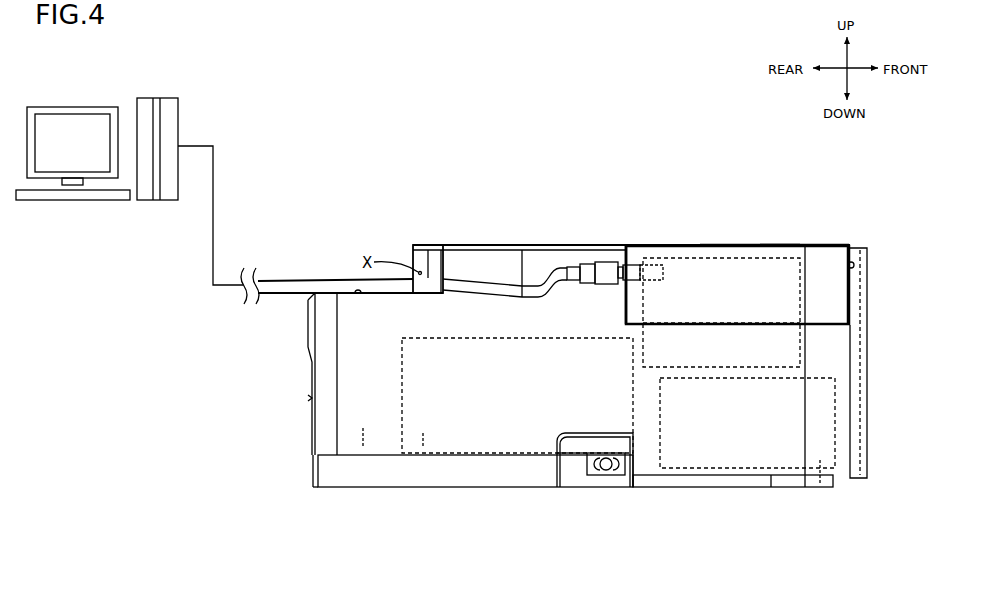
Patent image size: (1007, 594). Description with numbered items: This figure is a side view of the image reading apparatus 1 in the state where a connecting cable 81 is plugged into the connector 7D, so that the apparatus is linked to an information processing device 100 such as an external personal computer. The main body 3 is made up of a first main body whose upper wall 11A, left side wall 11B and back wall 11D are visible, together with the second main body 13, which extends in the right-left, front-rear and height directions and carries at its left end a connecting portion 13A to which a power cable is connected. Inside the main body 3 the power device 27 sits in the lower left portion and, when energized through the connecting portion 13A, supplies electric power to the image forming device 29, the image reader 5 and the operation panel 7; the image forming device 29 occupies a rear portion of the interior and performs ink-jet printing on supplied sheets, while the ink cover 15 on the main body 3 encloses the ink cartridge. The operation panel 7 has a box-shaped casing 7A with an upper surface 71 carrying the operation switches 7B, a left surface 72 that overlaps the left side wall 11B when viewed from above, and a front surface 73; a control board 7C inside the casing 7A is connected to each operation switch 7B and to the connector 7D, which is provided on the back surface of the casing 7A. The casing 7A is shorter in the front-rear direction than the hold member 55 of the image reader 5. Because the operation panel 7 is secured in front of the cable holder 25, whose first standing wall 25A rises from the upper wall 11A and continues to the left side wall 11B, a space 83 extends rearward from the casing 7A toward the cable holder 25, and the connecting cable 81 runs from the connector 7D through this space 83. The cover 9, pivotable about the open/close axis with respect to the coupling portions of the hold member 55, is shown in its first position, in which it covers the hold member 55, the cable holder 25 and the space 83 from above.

The image reading apparatus 1 is at (276, 480).
The main body 3 is at (307, 361).
The image reader 5 is at (412, 248).
The operation panel 7 is at (702, 239).
The casing 7A is at (790, 243).
The operation switches 7B is at (747, 243).
The control board 7C is at (790, 353).
The connector 7D is at (628, 245).
The cover 9 is at (560, 243).
The upper wall 11A is at (362, 296).
The left side wall 11B is at (363, 447).
The back wall 11D is at (312, 407).
The second main body 13 is at (520, 474).
The connecting portion 13A is at (600, 477).
The ink cover 15 is at (867, 248).
The cable holder 25 is at (460, 261).
The first standing wall 25A is at (500, 258).
The power device 27 is at (820, 486).
The image forming device 29 is at (423, 447).
The hold member 55 is at (437, 258).
The upper surface 71 is at (817, 243).
The left surface 72 is at (727, 303).
The front surface 73 is at (848, 266).
The connecting cable 81 is at (597, 262).
The space 83 is at (568, 293).
The information processing device 100 is at (157, 95).